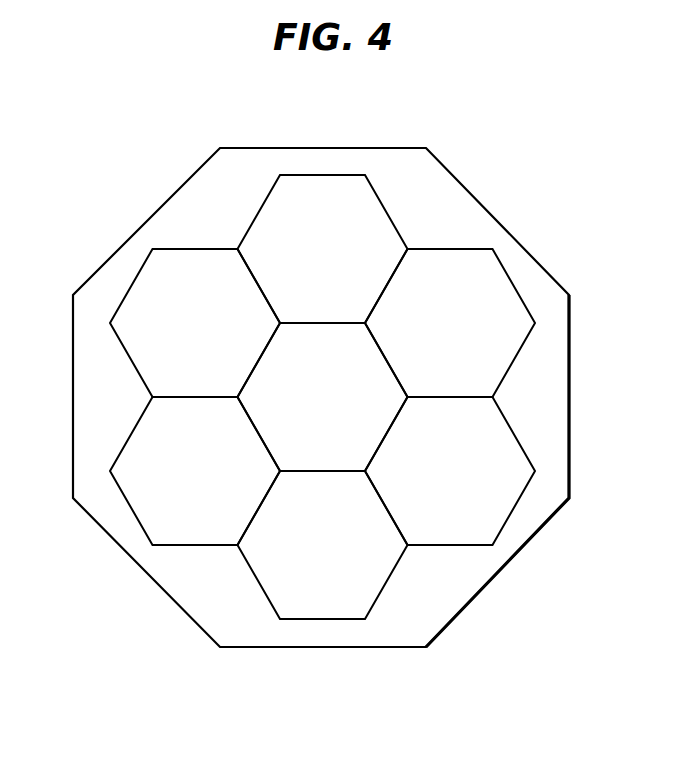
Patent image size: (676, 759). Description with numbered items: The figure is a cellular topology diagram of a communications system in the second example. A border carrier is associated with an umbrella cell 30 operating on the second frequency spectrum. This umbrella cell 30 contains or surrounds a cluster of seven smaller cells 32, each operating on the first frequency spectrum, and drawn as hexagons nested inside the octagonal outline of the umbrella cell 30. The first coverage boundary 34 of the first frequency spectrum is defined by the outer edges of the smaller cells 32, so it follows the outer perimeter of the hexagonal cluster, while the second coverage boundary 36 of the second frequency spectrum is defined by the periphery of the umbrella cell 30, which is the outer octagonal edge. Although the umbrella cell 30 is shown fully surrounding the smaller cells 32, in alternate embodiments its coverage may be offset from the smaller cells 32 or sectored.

The umbrella cell 30 is at (388, 186).
The smaller cells 32 is at (322, 397).
The first coverage boundary 34 is at (323, 398).
The second coverage boundary 36 is at (330, 148).